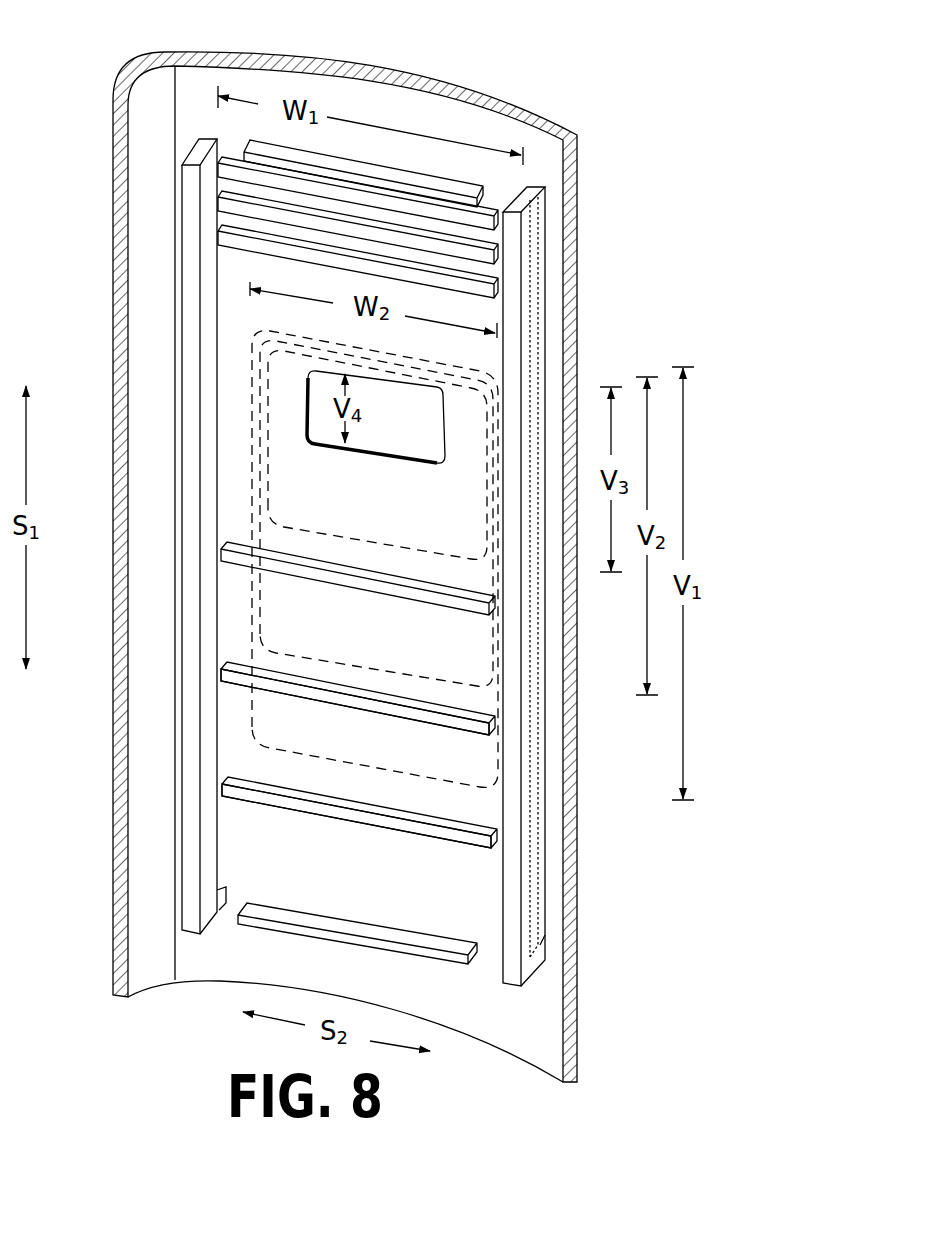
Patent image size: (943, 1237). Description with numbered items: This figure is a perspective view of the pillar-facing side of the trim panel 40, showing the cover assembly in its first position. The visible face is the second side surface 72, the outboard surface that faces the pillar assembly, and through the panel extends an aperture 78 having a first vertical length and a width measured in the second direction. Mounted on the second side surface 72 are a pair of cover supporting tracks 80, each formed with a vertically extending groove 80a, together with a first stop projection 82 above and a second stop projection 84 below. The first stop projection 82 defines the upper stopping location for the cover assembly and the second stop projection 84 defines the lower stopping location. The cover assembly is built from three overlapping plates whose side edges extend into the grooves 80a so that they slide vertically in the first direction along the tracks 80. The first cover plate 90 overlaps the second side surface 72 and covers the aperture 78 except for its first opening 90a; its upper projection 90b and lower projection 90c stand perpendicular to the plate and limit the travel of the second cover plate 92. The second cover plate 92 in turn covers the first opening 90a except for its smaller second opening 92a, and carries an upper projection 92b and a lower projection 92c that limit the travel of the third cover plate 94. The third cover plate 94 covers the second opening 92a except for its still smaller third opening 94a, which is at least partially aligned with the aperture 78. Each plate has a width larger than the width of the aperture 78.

The trim panel 40 is at (549, 120).
The second side surface 72 is at (495, 126).
The aperture 78 is at (393, 772).
The cover supporting tracks 80 is at (193, 259).
The vertically extending grooves 80a is at (220, 892).
The first stop projection 82 is at (358, 165).
The second stop projection 84 is at (417, 938).
The first cover plate 90 is at (308, 773).
The first opening 90a is at (385, 670).
The upper projection 90b is at (481, 210).
The lower projection 90c is at (370, 815).
The second cover plate 92 is at (325, 660).
The second opening 92a is at (320, 540).
The upper projection 92b is at (478, 244).
The lower projection 92c is at (370, 702).
The third cover plate 94 is at (428, 538).
The third opening 94a is at (368, 447).